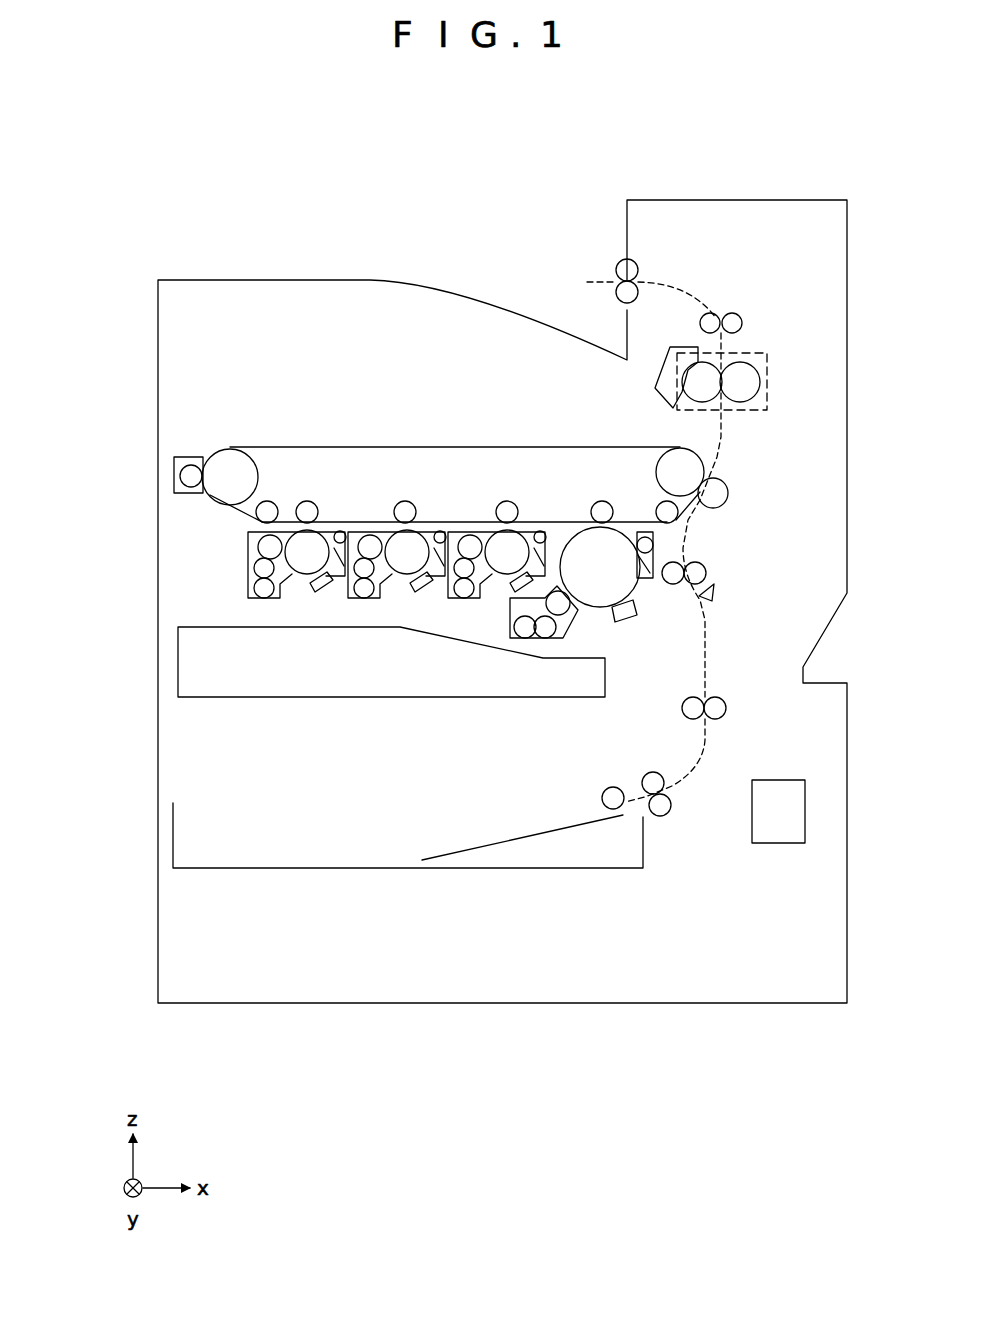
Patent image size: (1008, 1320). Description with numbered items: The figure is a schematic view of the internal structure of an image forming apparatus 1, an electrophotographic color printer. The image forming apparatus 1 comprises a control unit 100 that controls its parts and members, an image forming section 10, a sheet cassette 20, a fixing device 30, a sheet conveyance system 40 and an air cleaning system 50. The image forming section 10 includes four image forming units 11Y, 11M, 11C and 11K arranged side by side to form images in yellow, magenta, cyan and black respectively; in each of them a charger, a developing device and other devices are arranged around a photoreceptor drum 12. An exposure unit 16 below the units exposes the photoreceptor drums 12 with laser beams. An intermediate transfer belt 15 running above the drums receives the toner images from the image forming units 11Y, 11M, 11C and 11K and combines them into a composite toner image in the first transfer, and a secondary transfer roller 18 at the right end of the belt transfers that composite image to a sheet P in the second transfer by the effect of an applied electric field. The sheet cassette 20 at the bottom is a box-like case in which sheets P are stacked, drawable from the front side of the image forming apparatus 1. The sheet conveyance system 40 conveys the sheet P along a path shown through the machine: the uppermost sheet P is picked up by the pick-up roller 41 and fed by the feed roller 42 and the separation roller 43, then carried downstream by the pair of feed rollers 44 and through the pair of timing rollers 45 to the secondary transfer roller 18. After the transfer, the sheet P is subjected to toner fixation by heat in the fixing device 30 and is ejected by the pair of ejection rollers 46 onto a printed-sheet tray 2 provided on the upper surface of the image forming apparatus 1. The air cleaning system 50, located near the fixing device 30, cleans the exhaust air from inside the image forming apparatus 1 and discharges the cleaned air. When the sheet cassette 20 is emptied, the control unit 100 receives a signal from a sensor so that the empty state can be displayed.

The image forming apparatus 1 is at (256, 133).
The printed-sheet tray 2 is at (415, 283).
The image forming section 10 is at (439, 524).
The image forming unit 11Y is at (325, 513).
The image forming unit 11M is at (422, 513).
The image forming unit 11C is at (525, 513).
The image forming unit 11K is at (618, 510).
The photoreceptor drum 12 is at (305, 577).
The intermediate transfer belt 15 is at (280, 447).
The exposure unit 16 is at (292, 697).
The secondary transfer roller 18 is at (730, 491).
The sheet cassette 20 is at (308, 878).
The fixing device 30 is at (723, 363).
The sheet conveyance system 40 is at (652, 555).
The pick-up roller 41 is at (601, 797).
The feed roller 42 is at (648, 775).
The separation roller 43 is at (661, 817).
The pair of feed rollers 44 is at (684, 713).
The pair of timing rollers 45 is at (707, 570).
The pair of ejection rollers 46 is at (616, 268).
The air cleaning system 50 is at (750, 410).
The control unit 100 is at (778, 793).
The sheet P is at (457, 851).